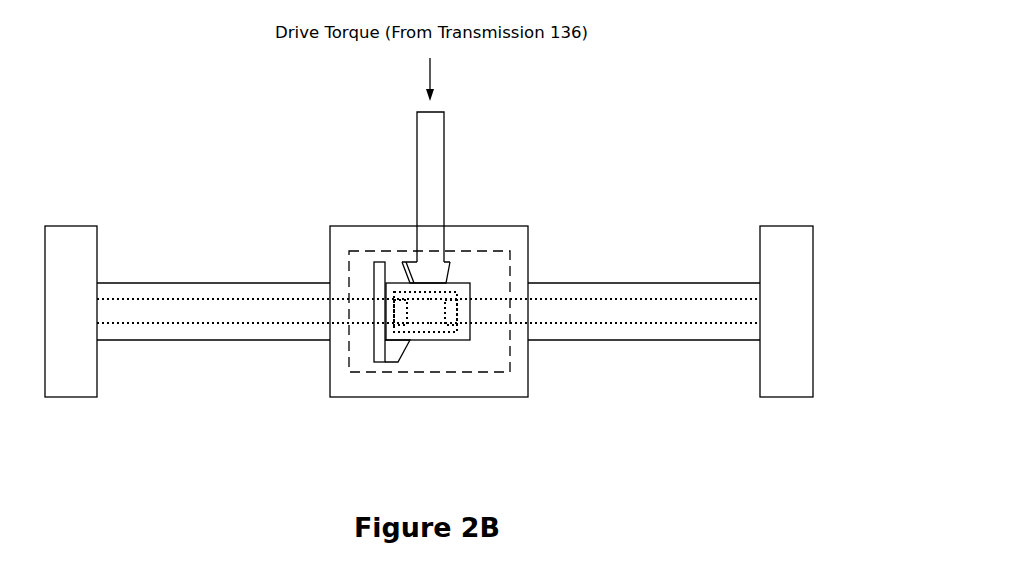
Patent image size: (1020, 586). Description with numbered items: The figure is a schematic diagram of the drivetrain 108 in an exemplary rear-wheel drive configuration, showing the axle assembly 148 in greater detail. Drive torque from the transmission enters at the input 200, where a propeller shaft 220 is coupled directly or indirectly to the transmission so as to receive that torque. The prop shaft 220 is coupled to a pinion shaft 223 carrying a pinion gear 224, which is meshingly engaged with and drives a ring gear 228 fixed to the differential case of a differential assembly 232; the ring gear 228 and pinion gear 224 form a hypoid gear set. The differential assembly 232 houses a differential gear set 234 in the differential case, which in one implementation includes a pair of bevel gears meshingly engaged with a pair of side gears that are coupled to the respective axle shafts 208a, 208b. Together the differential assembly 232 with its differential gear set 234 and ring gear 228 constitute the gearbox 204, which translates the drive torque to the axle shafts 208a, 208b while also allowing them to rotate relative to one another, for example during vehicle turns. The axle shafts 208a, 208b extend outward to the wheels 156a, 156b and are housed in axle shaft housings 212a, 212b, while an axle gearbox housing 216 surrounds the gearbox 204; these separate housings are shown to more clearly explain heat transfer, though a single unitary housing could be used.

The drivetrain 108 is at (699, 100).
The axle assembly 148 is at (268, 161).
The wheel 156a is at (70, 397).
The wheel 156b is at (785, 397).
The input 200 is at (396, 204).
The gearbox 204 is at (498, 372).
The axle shaft 208a is at (212, 298).
The axle shaft 208b is at (650, 298).
The axle shaft housing 212a is at (213, 340).
The axle shaft housing 212b is at (645, 340).
The axle gearbox housing 216 is at (528, 226).
The propeller shaft 220 is at (444, 170).
The pinion shaft 223 is at (417, 259).
The pinion gear 224 is at (446, 270).
The ring gear 228 is at (374, 270).
The differential assembly 232 is at (434, 362).
The differential gear set 234 is at (447, 332).